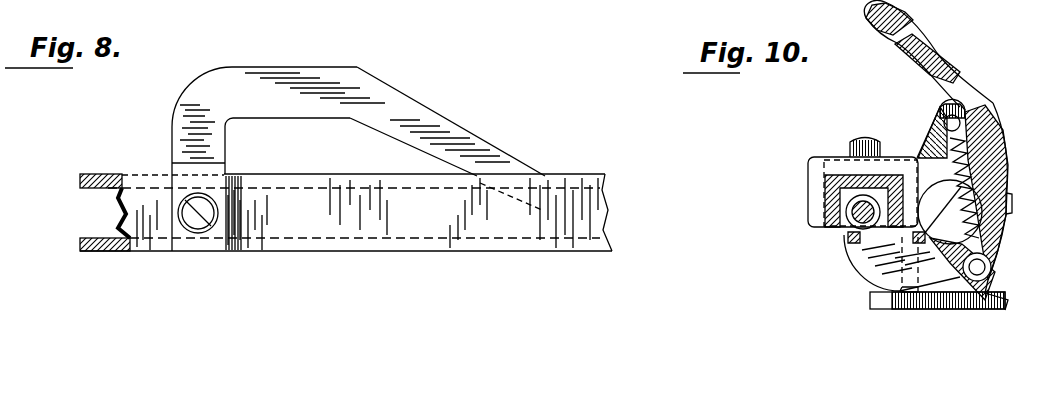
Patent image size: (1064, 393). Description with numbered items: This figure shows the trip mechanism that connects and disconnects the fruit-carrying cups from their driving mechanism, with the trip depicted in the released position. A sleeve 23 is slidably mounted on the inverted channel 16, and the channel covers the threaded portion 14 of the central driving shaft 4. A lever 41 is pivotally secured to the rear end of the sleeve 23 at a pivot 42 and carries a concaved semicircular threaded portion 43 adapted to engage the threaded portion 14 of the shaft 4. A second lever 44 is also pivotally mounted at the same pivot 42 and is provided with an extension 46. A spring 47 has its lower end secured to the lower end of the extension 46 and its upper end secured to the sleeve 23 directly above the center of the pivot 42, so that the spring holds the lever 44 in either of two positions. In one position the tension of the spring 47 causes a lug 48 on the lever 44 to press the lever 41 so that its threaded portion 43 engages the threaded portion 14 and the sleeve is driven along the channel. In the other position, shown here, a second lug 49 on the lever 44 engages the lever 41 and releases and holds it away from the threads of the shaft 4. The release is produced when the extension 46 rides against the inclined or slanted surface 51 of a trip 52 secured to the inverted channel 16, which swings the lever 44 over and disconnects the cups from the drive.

In FIG. 10, the central driving shaft 4 is at (856, 219).
In FIG. 10, the threaded portion 14 is at (862, 205).
In FIG. 8, the inverted channel 16 is at (300, 178).
In FIG. 10, the inverted channel 16 is at (826, 191).
In FIG. 10, the sleeve 23 is at (817, 160).
In FIG. 10, the lever 41 is at (880, 267).
In FIG. 10, the pivot 42 is at (915, 157).
In FIG. 10, the concaved semicircular threaded portion 43 is at (850, 238).
In FIG. 10, the lever 44 is at (894, 48).
In FIG. 10, the extension 46 is at (1000, 260).
In FIG. 10, the spring 47 is at (968, 163).
In FIG. 10, the lug 48 is at (1010, 203).
In FIG. 10, the second lug 49 is at (897, 250).
In FIG. 8, the inclined or slanted surface 51 is at (458, 122).
In FIG. 10, the inclined or slanted surface 51 is at (934, 311).
In FIG. 8, the trip 52 is at (311, 67).
In FIG. 10, the trip 52 is at (918, 169).